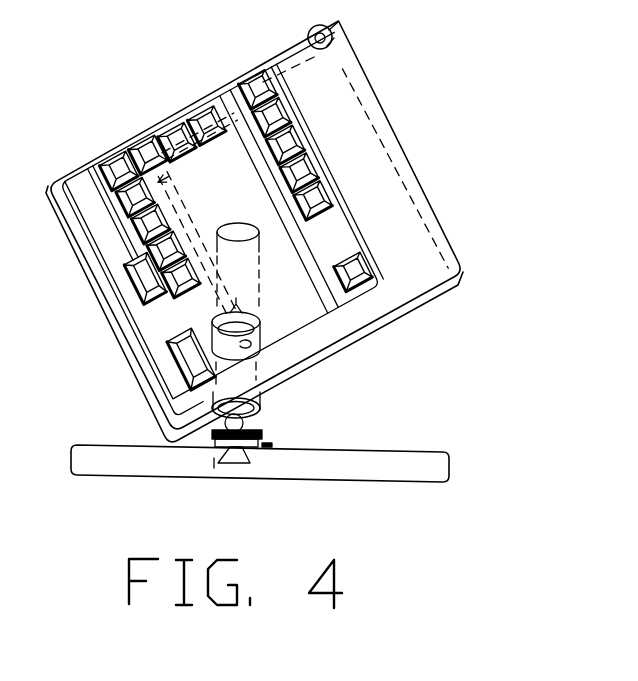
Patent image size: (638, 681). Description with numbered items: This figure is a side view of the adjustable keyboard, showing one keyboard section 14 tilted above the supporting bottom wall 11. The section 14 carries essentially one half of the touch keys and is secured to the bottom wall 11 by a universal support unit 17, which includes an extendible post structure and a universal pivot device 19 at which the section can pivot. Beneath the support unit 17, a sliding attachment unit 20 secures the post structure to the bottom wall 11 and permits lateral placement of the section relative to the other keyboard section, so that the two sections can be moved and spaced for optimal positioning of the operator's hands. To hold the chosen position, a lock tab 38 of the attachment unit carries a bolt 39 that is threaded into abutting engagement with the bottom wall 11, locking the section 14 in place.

The supporting bottom wall 11 is at (448, 463).
The right keyboard section 14 is at (427, 317).
The universal support unit 17 is at (263, 368).
The universal pivot device 19 is at (267, 422).
The sliding attachment unit 20 is at (213, 463).
The lock tab 38 is at (266, 452).
The bolt 39 is at (271, 438).